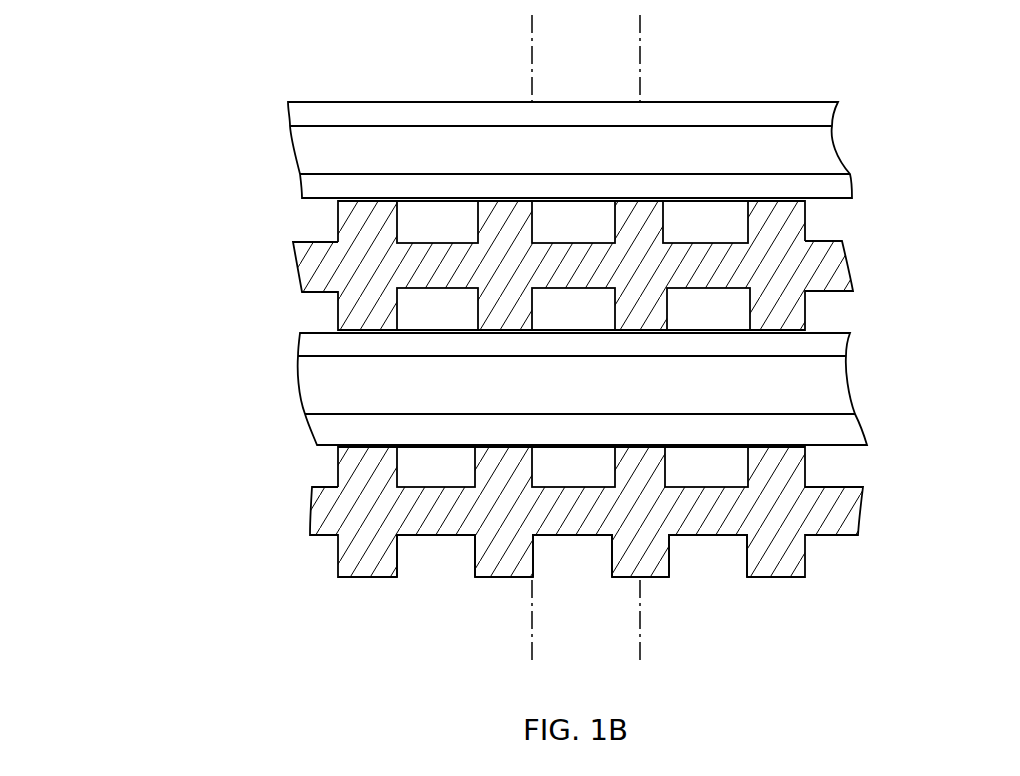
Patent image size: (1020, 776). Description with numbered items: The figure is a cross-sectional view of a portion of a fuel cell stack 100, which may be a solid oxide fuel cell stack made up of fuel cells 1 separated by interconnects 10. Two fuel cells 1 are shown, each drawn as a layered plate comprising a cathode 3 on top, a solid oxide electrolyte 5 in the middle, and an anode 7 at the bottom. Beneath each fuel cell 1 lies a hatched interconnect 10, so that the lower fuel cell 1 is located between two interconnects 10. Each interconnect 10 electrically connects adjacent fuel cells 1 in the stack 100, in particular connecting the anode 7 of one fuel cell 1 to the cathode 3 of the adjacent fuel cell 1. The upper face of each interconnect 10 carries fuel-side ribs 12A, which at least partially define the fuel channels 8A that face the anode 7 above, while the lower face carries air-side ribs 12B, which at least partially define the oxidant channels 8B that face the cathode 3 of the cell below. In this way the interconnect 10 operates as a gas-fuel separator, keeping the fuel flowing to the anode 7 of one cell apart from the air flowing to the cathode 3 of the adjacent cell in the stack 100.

The fuel cell stack 100 is at (166, 215).
The fuel cell 1 is at (870, 100).
The cathode 3 is at (288, 113).
The solid oxide electrolyte 5 is at (297, 156).
The anode 7 is at (303, 190).
The interconnect 10 is at (870, 218).
The fuel-side ribs 12A is at (338, 222).
The air-side ribs 12B is at (338, 309).
The fuel channels 8A is at (420, 238).
The oxidant channels 8B is at (420, 325).